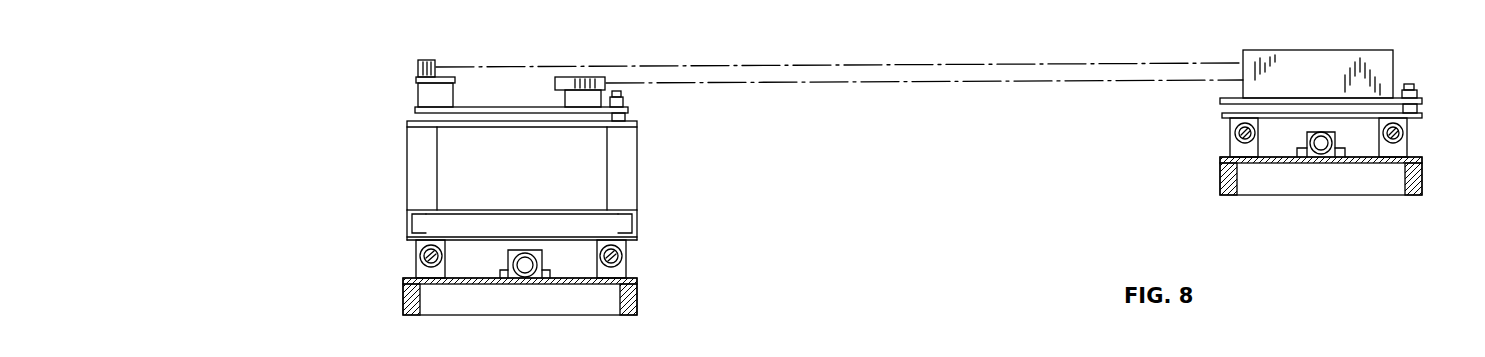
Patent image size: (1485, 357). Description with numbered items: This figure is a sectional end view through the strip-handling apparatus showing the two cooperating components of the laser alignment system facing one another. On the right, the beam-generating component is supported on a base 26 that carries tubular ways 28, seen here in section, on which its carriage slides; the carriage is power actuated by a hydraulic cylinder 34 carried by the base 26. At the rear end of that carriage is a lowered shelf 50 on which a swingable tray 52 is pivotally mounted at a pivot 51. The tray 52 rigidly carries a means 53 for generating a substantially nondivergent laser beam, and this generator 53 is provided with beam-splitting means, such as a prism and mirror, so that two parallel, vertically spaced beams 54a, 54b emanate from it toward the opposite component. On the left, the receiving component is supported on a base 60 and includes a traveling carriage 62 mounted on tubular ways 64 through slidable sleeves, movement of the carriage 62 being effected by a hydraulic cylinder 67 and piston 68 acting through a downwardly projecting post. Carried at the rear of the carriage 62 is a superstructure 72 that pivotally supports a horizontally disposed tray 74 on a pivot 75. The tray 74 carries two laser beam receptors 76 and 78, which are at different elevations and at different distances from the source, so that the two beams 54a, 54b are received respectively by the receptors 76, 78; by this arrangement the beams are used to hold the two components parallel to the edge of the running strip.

The base 26 is at (1410, 183).
The tubular ways 28 is at (1230, 135).
The hydraulic cylinder 34 is at (1309, 140).
The lowered shelf 50 is at (1222, 115).
The pivot 51 is at (1410, 88).
The swingable tray 52 is at (1220, 101).
The laser beam generating means 53 is at (1306, 58).
The laser beam 54a is at (968, 64).
The laser beam 54b is at (976, 83).
The base 60 is at (584, 300).
The traveling carriage 62 is at (637, 226).
The tubular ways 64 is at (421, 254).
The hydraulic cylinder 67 is at (537, 262).
The piston 68 is at (418, 266).
The superstructure 72 is at (618, 172).
The tray 74 is at (414, 109).
The pivot 75 is at (623, 99).
The laser beam receptor 76 is at (560, 79).
The laser beam receptor 78 is at (418, 66).